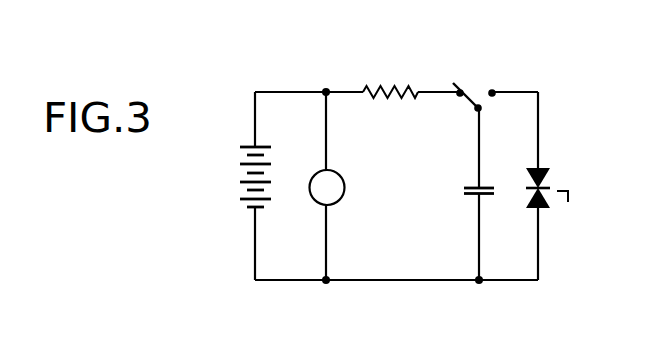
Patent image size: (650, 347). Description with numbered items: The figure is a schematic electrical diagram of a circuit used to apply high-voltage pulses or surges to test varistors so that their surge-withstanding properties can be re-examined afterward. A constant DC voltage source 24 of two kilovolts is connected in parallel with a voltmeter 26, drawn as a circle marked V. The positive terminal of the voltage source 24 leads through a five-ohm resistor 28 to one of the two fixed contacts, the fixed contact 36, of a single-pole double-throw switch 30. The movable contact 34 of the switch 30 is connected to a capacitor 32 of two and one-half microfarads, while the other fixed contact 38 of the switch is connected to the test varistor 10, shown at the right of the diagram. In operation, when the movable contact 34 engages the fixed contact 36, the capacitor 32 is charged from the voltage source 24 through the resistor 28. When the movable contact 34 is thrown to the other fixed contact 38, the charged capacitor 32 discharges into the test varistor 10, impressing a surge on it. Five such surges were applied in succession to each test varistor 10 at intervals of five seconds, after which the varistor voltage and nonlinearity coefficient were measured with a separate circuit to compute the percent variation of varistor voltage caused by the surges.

The test varistor 10 is at (547, 205).
The constant DC voltage source 24 is at (263, 146).
The voltmeter 26 is at (344, 192).
The resistor 28 is at (392, 98).
The single-pole double-throw switch 30 is at (485, 89).
The capacitor 32 is at (470, 196).
The movable contact 34 is at (462, 88).
The fixed contact 36 is at (460, 98).
The other fixed contact 38 is at (494, 96).